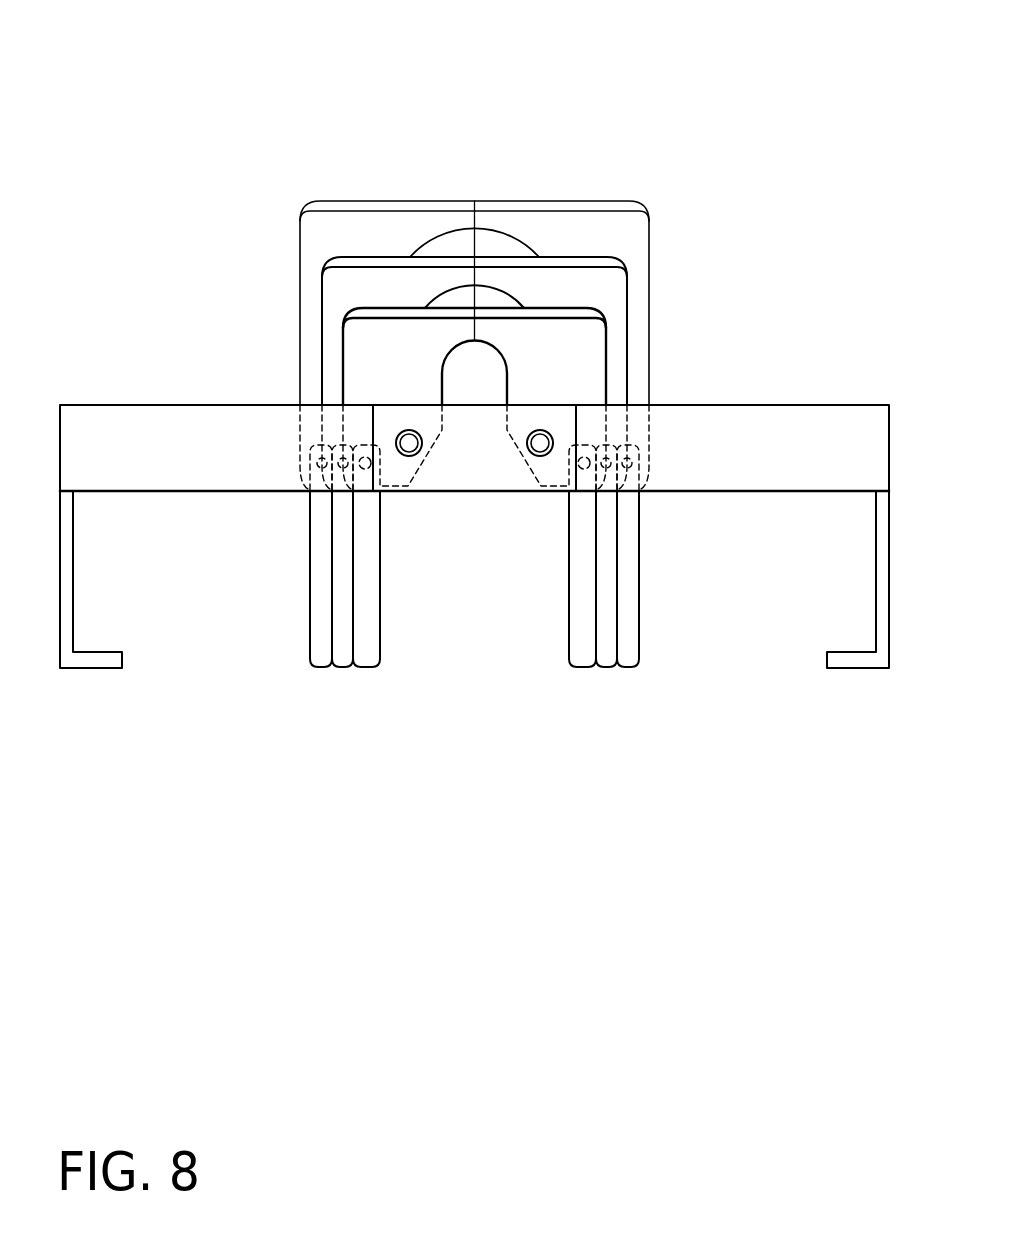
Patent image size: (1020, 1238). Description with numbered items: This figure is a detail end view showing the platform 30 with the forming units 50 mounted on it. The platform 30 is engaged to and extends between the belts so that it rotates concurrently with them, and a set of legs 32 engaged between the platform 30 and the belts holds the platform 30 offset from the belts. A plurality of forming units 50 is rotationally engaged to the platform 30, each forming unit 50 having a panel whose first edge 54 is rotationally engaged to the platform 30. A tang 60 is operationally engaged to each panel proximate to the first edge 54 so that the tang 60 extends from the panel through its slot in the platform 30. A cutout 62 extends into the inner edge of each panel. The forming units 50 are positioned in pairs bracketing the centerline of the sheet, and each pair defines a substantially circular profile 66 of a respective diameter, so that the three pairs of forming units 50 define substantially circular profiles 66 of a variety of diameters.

The platform 30 is at (750, 430).
The legs 32 is at (95, 670).
The forming units 50 is at (423, 340).
The first edge 54 is at (557, 490).
The tang 60 is at (347, 655).
The cutout 62 is at (455, 243).
The substantially circular profile 66 is at (484, 375).